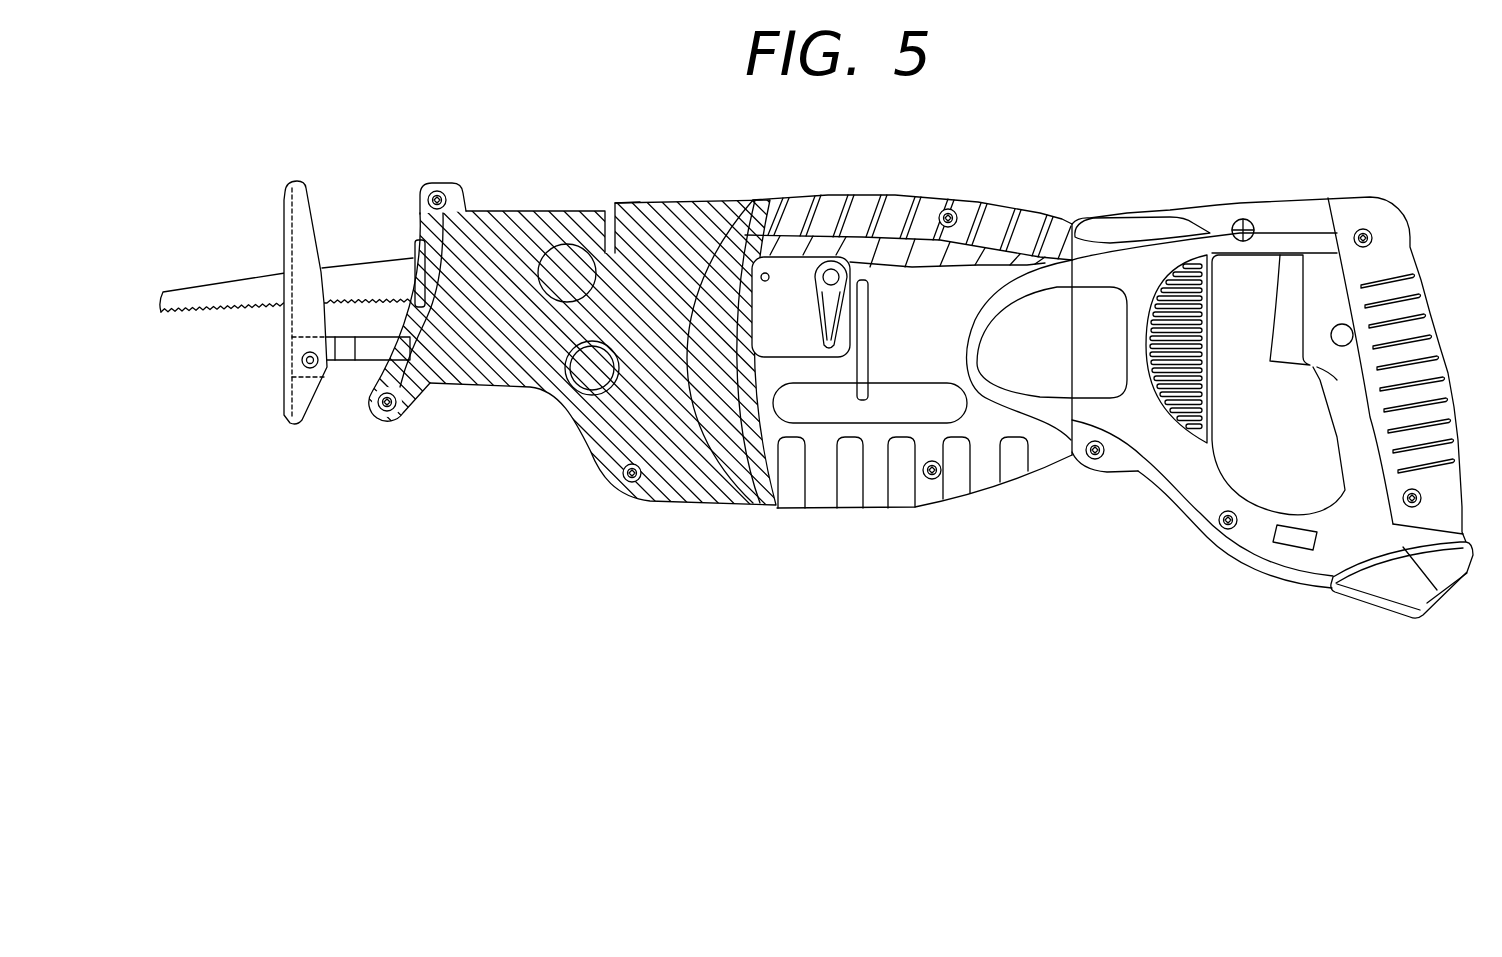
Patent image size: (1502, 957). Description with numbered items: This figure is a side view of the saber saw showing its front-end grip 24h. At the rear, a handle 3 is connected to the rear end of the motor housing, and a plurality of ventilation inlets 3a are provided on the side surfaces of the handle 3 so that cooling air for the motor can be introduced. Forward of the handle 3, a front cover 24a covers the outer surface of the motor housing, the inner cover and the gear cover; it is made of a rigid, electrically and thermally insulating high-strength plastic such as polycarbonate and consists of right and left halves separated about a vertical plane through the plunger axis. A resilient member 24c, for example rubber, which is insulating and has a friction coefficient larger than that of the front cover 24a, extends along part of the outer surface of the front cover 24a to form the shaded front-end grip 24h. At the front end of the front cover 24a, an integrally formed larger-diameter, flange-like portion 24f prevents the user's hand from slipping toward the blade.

The handle 3 is at (1380, 213).
The ventilation inlets 3a is at (1180, 278).
The front cover 24a is at (986, 478).
The resilient member 24c is at (668, 485).
The larger-diameter portion 24f is at (440, 184).
The front-end grip 24h is at (541, 210).